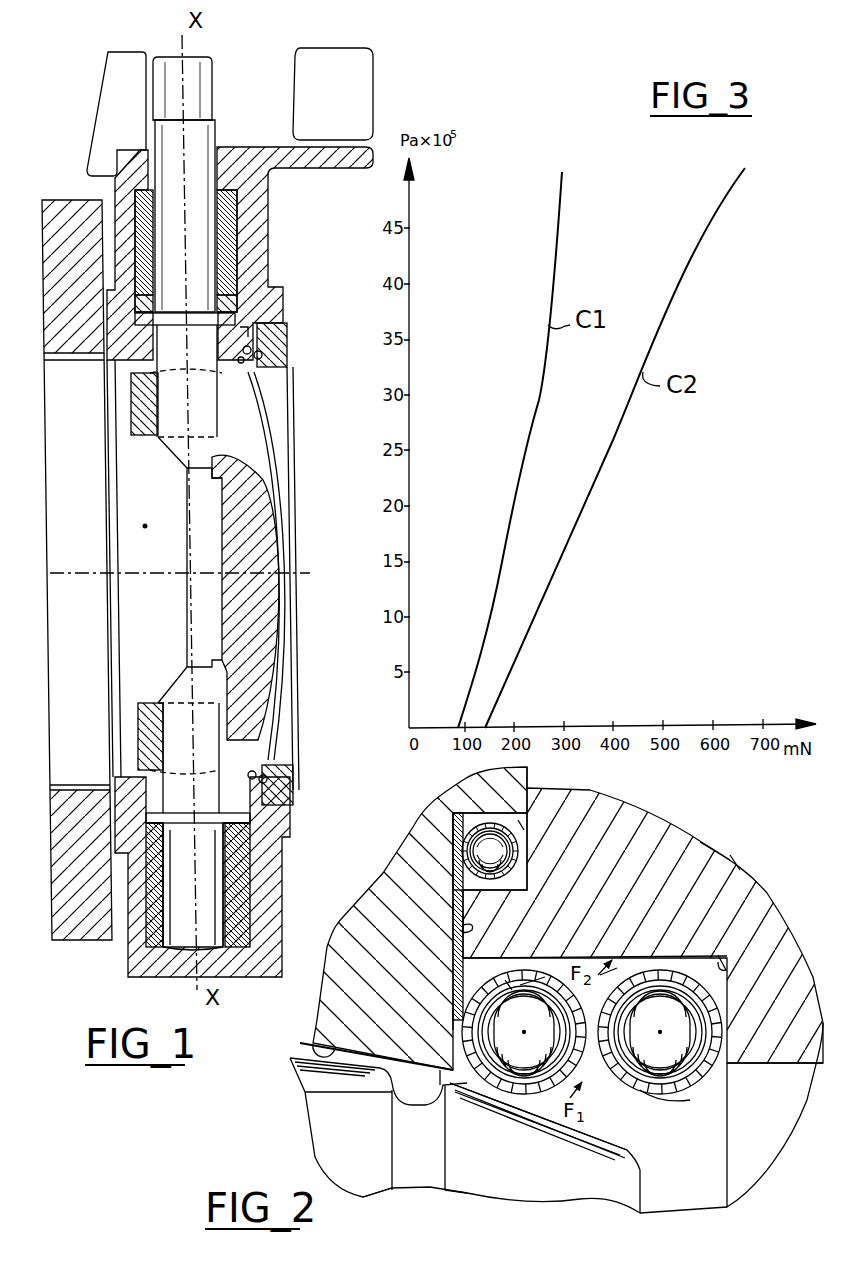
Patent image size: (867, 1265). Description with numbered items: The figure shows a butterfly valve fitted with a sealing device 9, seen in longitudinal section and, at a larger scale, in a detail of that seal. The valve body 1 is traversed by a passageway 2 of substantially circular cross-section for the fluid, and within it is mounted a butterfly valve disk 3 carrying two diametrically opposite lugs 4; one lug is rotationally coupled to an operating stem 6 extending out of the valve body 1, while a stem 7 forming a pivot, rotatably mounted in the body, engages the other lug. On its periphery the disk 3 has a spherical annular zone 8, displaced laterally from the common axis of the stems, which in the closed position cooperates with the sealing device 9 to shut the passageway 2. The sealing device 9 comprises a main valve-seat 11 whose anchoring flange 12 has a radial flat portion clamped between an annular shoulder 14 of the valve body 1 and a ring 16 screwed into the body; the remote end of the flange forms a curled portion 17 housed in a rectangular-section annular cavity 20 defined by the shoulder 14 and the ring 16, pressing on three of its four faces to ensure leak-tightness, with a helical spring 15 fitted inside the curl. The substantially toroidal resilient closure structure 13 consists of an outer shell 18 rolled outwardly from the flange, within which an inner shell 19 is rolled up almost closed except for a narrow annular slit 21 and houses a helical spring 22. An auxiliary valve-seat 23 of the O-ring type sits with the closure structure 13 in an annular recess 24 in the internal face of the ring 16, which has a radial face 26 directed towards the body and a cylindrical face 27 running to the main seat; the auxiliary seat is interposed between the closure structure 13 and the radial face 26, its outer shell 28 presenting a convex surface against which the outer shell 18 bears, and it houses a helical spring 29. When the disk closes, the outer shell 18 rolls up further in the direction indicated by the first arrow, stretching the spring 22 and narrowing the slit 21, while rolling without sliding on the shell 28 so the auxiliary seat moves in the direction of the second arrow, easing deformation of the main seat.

In FIG. 1, the valve body 1 is at (260, 238).
In FIG. 2, the valve body 1 is at (405, 880).
In FIG. 1, the passageway 2 is at (183, 570).
In FIG. 2, the passageway 2 is at (312, 1044).
In FIG. 1, the butterfly valve disk 3 is at (275, 505).
In FIG. 2, the butterfly valve disk 3 is at (505, 1210).
In FIG. 1, the lugs 4 is at (131, 418).
In FIG. 2, the lugs 4 is at (330, 1125).
In FIG. 1, the operating stem 6 is at (197, 123).
In FIG. 1, the stem 7 is at (180, 905).
In FIG. 1, the spherical annular zone 8 is at (248, 437).
In FIG. 2, the spherical annular zone 8 is at (536, 1138).
In FIG. 1, the sealing device 9 is at (248, 312).
In FIG. 2, the sealing device 9 is at (590, 900).
In FIG. 2, the main valve-seat 11 is at (535, 820).
In FIG. 2, the anchoring flange 12 is at (445, 908).
In FIG. 2, the closure structure 13 is at (445, 1020).
In FIG. 2, the annular shoulder 14 is at (505, 922).
In FIG. 2, the helical spring 15 is at (468, 845).
In FIG. 1, the ring 16 is at (278, 345).
In FIG. 2, the ring 16 is at (735, 860).
In FIG. 2, the curled portion 17 is at (462, 820).
In FIG. 2, the outer shell 18 is at (578, 1112).
In FIG. 2, the inner shell 19 is at (545, 1090).
In FIG. 2, the annular cavity 20 is at (524, 825).
In FIG. 2, the annular slit 21 is at (640, 970).
In FIG. 2, the helical spring 22 is at (534, 985).
In FIG. 1, the auxiliary valve-seat 23 is at (270, 380).
In FIG. 2, the auxiliary valve-seat 23 is at (690, 1098).
In FIG. 2, the annular recess 24 is at (715, 960).
In FIG. 2, the radial face 26 is at (728, 968).
In FIG. 2, the cylindrical face 27 is at (718, 872).
In FIG. 2, the outer shell 28 is at (712, 1082).
In FIG. 2, the helical spring 29 is at (740, 1020).